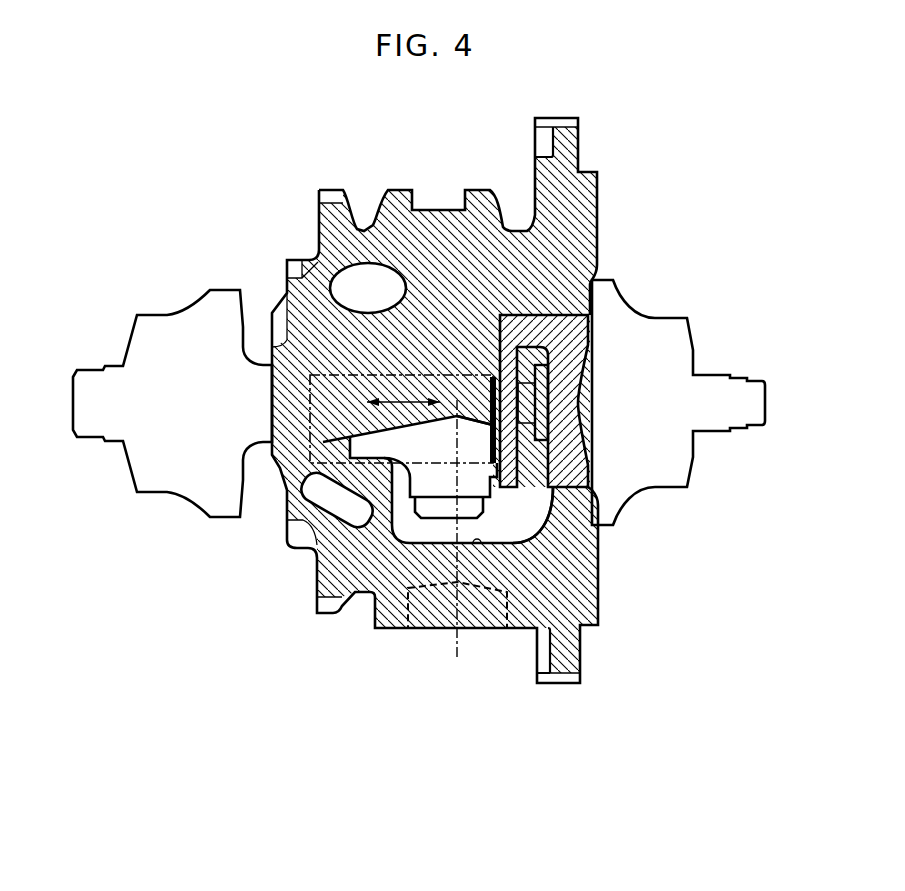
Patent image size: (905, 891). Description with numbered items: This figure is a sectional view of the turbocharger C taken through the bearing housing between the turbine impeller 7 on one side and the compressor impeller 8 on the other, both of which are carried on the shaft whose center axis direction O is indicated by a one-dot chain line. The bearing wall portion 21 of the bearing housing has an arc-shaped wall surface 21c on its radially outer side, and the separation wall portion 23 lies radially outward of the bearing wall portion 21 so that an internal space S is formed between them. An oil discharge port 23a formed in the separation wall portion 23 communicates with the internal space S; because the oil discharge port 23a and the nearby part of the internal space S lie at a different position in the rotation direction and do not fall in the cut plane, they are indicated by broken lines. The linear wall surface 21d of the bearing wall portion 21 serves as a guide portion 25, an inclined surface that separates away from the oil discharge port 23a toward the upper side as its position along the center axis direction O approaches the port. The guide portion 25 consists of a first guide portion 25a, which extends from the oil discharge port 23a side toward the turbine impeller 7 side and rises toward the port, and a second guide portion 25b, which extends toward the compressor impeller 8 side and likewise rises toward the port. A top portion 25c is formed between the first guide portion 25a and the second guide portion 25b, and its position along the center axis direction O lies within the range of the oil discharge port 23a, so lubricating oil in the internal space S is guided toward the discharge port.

The turbocharger C is at (108, 126).
The turbine impeller 7 is at (150, 490).
The compressor impeller 8 is at (657, 488).
The bearing wall portion 21 is at (392, 505).
The arc-shaped wall surface 21c is at (387, 457).
The linear wall surface 21d is at (365, 442).
The separation wall portion 23 is at (473, 537).
The oil discharge port 23a is at (484, 630).
The guide portion 25 is at (410, 480).
The first guide portion 25a is at (437, 418).
The second guide portion 25b is at (497, 470).
The top portion 25c is at (496, 410).
The center axis direction O is at (385, 395).
The internal space S is at (508, 538).